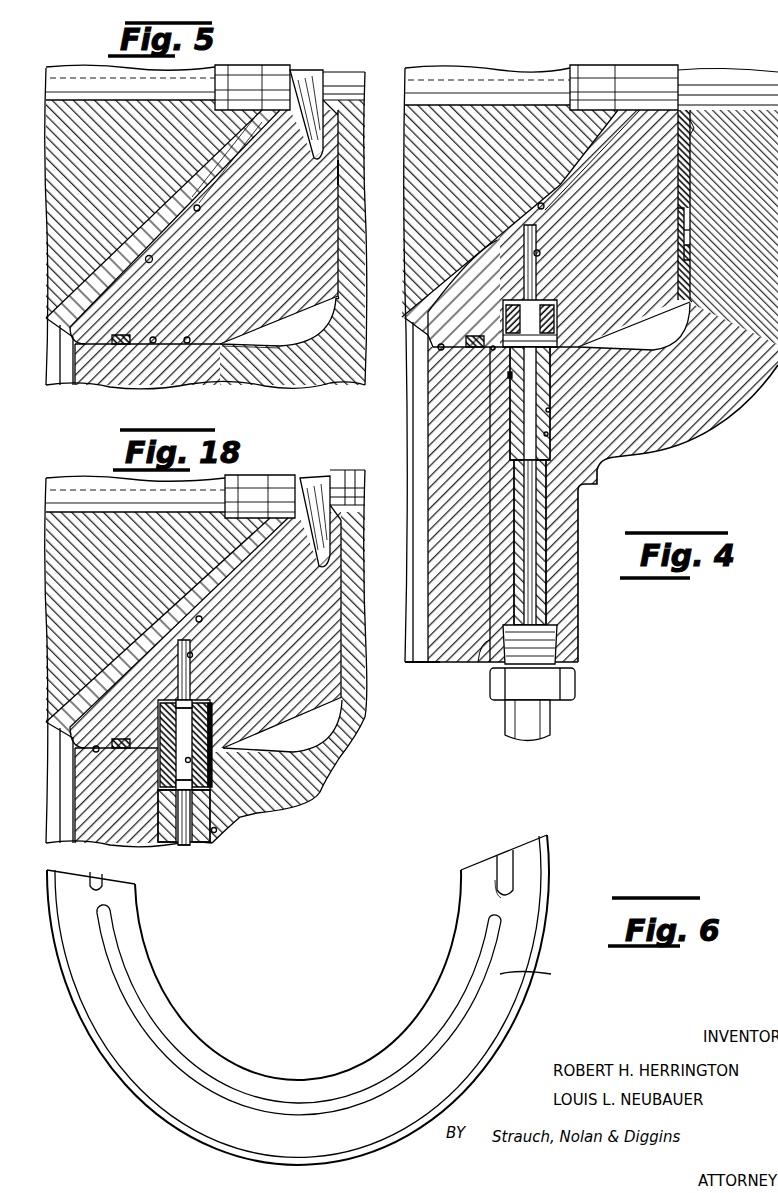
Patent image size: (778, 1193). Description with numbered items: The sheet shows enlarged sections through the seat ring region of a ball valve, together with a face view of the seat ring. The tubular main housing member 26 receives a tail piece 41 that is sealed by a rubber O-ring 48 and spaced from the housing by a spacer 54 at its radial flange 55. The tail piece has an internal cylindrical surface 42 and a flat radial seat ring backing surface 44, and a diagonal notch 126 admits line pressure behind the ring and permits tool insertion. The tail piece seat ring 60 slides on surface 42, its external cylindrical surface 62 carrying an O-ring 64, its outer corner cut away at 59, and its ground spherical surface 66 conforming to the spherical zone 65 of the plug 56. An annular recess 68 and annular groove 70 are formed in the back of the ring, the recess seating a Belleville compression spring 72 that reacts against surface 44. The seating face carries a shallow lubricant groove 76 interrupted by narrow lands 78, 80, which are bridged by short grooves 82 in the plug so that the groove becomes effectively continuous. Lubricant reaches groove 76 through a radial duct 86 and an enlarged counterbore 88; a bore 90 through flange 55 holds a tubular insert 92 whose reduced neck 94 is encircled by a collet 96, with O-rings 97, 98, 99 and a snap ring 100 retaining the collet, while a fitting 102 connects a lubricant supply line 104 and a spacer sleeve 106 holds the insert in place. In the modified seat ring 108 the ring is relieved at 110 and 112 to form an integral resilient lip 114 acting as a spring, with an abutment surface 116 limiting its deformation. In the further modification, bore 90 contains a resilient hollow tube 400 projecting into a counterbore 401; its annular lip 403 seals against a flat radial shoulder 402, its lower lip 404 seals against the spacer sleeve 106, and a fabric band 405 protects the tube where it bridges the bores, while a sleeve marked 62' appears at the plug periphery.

In FIG. 4, the tubular main housing member 26 is at (430, 662).
In FIG. 4, the tail piece 41 is at (694, 432).
In FIG. 18, the tail piece 41 is at (313, 808).
In FIG. 5, the internal cylindrical surface 42 is at (158, 345).
In FIG. 4, the internal cylindrical surface 42 is at (468, 348).
In FIG. 5, the flat radial seat ring backing surface 44 is at (340, 174).
In FIG. 4, the flat radial seat ring backing surface 44 is at (691, 258).
In FIG. 4, the rubber O-ring 48 is at (456, 498).
In FIG. 4, the spacer 54 is at (472, 660).
In FIG. 4, the radial flange 55 is at (572, 626).
In FIG. 18, the radial flange 55 is at (216, 832).
In FIG. 5, the plug 56 is at (140, 108).
In FIG. 4, the plug 56 is at (480, 106).
In FIG. 18, the plug 56 is at (90, 516).
In FIG. 5, the cut away outer corner 59 is at (276, 318).
In FIG. 4, the cut away outer corner 59 is at (652, 318).
In FIG. 18, the cut away outer corner 59 is at (290, 728).
In FIG. 4, the tail piece seat ring 60 is at (691, 303).
In FIG. 5, the external cylindrical surface 62 is at (174, 326).
In FIG. 4, the external cylindrical surface 62 is at (428, 488).
In FIG. 18, the external cylindrical surface 62 is at (116, 781).
In FIG. 5, the sleeve 62' is at (230, 87).
In FIG. 4, the sleeve 62' is at (587, 87).
In FIG. 18, the sleeve 62' is at (207, 496).
In FIG. 5, the O-ring 64 is at (120, 346).
In FIG. 4, the O-ring 64 is at (464, 334).
In FIG. 18, the O-ring 64 is at (122, 737).
In FIG. 5, the spherical zone 65 is at (146, 257).
In FIG. 4, the spherical zone 65 is at (470, 248).
In FIG. 5, the ground spherical surface 66 is at (120, 272).
In FIG. 4, the ground spherical surface 66 is at (582, 170).
In FIG. 4, the annular recess 68 is at (684, 162).
In FIG. 6, the annular recess 68 is at (107, 974).
In FIG. 4, the annular groove 70 is at (696, 228).
In FIG. 4, the annular compression spring 72 is at (695, 150).
In FIG. 5, the lubricant groove 76 is at (200, 212).
In FIG. 4, the lubricant groove 76 is at (542, 218).
In FIG. 18, the lubricant groove 76 is at (199, 630).
In FIG. 6, the lubricant groove 76 is at (500, 866).
In FIG. 6, the land 78 is at (508, 912).
In FIG. 6, the land 80 is at (98, 901).
In FIG. 5, the short groove 82 is at (195, 205).
In FIG. 4, the short groove 82 is at (540, 203).
In FIG. 18, the short groove 82 is at (198, 616).
In FIG. 4, the radial duct 86 is at (540, 253).
In FIG. 18, the radial duct 86 is at (193, 656).
In FIG. 4, the counterbore 88 is at (552, 361).
In FIG. 4, the bore 90 is at (548, 434).
In FIG. 18, the bore 90 is at (212, 838).
In FIG. 4, the tubular insert 92 is at (550, 410).
In FIG. 4, the reduced neck 94 is at (502, 348).
In FIG. 4, the collet 96 is at (553, 302).
In FIG. 4, the O-ring 97 is at (510, 374).
In FIG. 4, the O-ring 98 is at (505, 320).
In FIG. 4, the O-ring 99 is at (512, 298).
In FIG. 4, the snap ring 100 is at (558, 327).
In FIG. 4, the fitting 102 is at (576, 684).
In FIG. 4, the lubricant supply line 104 is at (552, 716).
In FIG. 4, the spacer sleeve 106 is at (548, 562).
In FIG. 18, the spacer sleeve 106 is at (190, 845).
In FIG. 5, the modified seat ring 108 is at (244, 346).
In FIG. 5, the internal relief 110 is at (330, 95).
In FIG. 18, the internal relief 110 is at (328, 522).
In FIG. 5, the back face relief 112 is at (339, 242).
In FIG. 5, the resilient lip 114 is at (345, 98).
In FIG. 18, the resilient lip 114 is at (312, 550).
In FIG. 5, the abutment surface 116 is at (342, 281).
In FIG. 4, the diagonal notch 126 is at (690, 110).
In FIG. 18, the hollow tube 400 is at (160, 716).
In FIG. 18, the counterbore 401 is at (200, 760).
In FIG. 18, the flat radial shoulder 402 is at (212, 702).
In FIG. 18, the annular lip 403 is at (186, 700).
In FIG. 18, the lip 404 is at (205, 785).
In FIG. 18, the band 405 is at (212, 730).